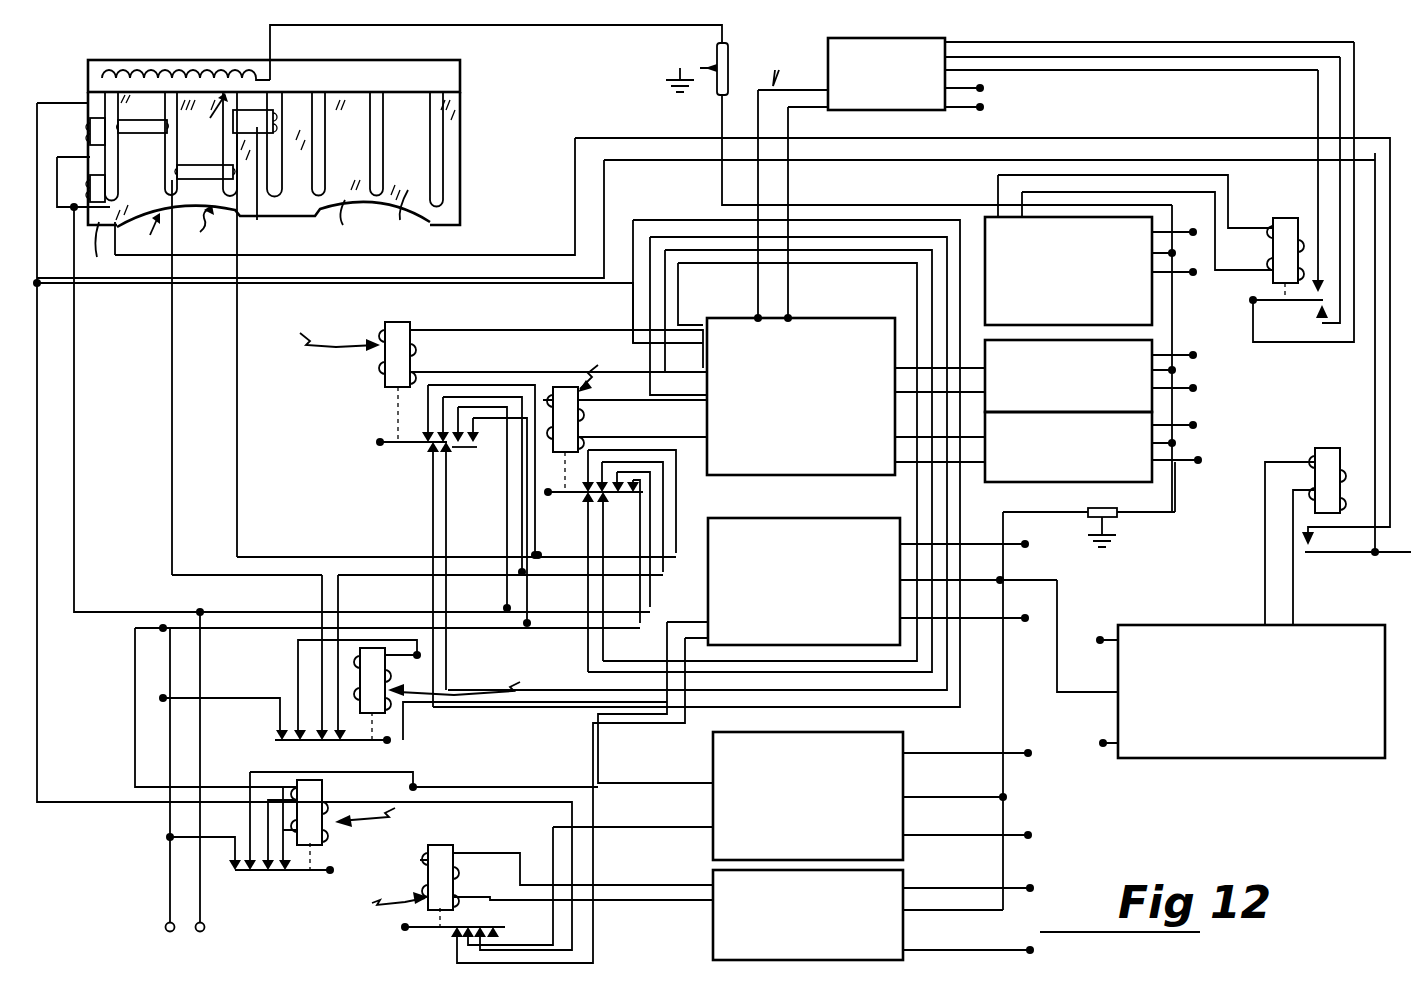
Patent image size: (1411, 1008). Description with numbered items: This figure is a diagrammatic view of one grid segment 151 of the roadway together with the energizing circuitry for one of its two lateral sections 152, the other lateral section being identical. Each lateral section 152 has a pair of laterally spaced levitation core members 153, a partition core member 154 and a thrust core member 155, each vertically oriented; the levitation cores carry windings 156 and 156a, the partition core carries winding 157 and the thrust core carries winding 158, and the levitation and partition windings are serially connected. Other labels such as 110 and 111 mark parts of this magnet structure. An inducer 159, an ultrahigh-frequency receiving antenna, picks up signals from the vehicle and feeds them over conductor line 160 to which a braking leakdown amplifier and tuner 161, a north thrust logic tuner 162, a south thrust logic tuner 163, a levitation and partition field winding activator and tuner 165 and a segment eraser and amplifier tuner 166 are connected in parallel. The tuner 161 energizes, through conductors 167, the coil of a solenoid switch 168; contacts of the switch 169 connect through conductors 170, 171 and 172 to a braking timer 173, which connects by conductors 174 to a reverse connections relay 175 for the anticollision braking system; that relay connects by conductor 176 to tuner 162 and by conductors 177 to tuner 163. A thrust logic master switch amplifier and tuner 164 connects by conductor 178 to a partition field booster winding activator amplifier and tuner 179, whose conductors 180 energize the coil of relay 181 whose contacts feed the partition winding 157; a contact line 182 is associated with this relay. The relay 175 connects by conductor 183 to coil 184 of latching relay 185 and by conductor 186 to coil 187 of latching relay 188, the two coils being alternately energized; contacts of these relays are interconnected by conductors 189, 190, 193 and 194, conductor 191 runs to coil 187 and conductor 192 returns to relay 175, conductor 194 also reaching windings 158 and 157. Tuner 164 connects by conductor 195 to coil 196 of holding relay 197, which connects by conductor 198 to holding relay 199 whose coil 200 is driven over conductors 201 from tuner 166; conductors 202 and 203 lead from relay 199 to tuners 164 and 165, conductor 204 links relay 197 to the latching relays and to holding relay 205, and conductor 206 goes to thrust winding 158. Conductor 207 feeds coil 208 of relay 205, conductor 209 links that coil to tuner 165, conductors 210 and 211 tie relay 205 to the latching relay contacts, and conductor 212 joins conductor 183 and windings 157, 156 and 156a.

The field winding coil 110 is at (158, 177).
The magnet pole 111 is at (205, 111).
The grid segment 151 is at (139, 236).
The lateral section 152 is at (198, 232).
The levitation core member 153 is at (393, 220).
The partition core member 154 is at (460, 155).
The thrust core member 155 is at (336, 219).
The levitation winding 156 is at (268, 235).
The levitation magnet winding 156a is at (145, 138).
The partition winding 157 is at (103, 253).
The thrust winding 158 is at (200, 165).
The inducer 159 is at (220, 72).
The electrical conductor line 160 is at (496, 52).
The braking leakdown amplifier and tuner 161 is at (990, 216).
The north thrust logic tuner 162 is at (1152, 345).
The south thrust logic tuner 163 is at (1000, 490).
The thrust logic master switch amplifier and tuner 164 is at (784, 511).
The levitation and partition field winding activator and tuner 165 is at (908, 742).
The segment eraser and amplifier tuner 166 is at (713, 935).
The electrical conductors 167 is at (1215, 196).
The solenoid switch 168 is at (1309, 213).
The switch 169 is at (1300, 300).
The conductor 170 is at (1354, 65).
The conductor 171 is at (1222, 60).
The conductor 172 is at (1135, 70).
The braking timer 173 is at (828, 48).
The electrical conductors 174 is at (789, 187).
The reverse connections relay 175 is at (741, 312).
The electrical conductor 176 is at (900, 367).
The electrical conductors 177 is at (905, 462).
The conductor 178 is at (1062, 588).
The partition field booster winding activator amplifier and tuner 179 is at (1137, 625).
The electrical conductors 180 is at (1265, 574).
The relay 181 is at (1333, 445).
The relay contact 182 is at (1383, 563).
The electrical conductor 183 is at (458, 363).
The coil 184 is at (373, 340).
The latching relay 185 is at (314, 337).
The conductor 186 is at (666, 436).
The coil 187 is at (585, 413).
The latching relay 188 is at (578, 415).
The conductor 189 is at (507, 382).
The conductor 190 is at (527, 525).
The conductor 191 is at (422, 505).
The conductor 192 is at (422, 478).
The conductor 193 is at (505, 490).
The conductor 194 is at (505, 515).
The conductor 195 is at (545, 720).
The relay coil 196 is at (402, 680).
The holding relay 197 is at (462, 685).
The conductor 198 is at (475, 740).
The holding relay 199 is at (373, 905).
The coil 200 is at (425, 874).
The conductors 201 is at (623, 885).
The conductor 202 is at (615, 740).
The conductor 203 is at (632, 820).
The conductor 204 is at (257, 700).
The holding relay 205 is at (289, 823).
The conductor 206 is at (172, 318).
The conductor 207 is at (470, 827).
The relay coil 208 is at (322, 843).
The conductor 209 is at (525, 780).
The conductor 210 is at (170, 880).
The conductor 211 is at (135, 655).
The conductor 212 is at (37, 757).